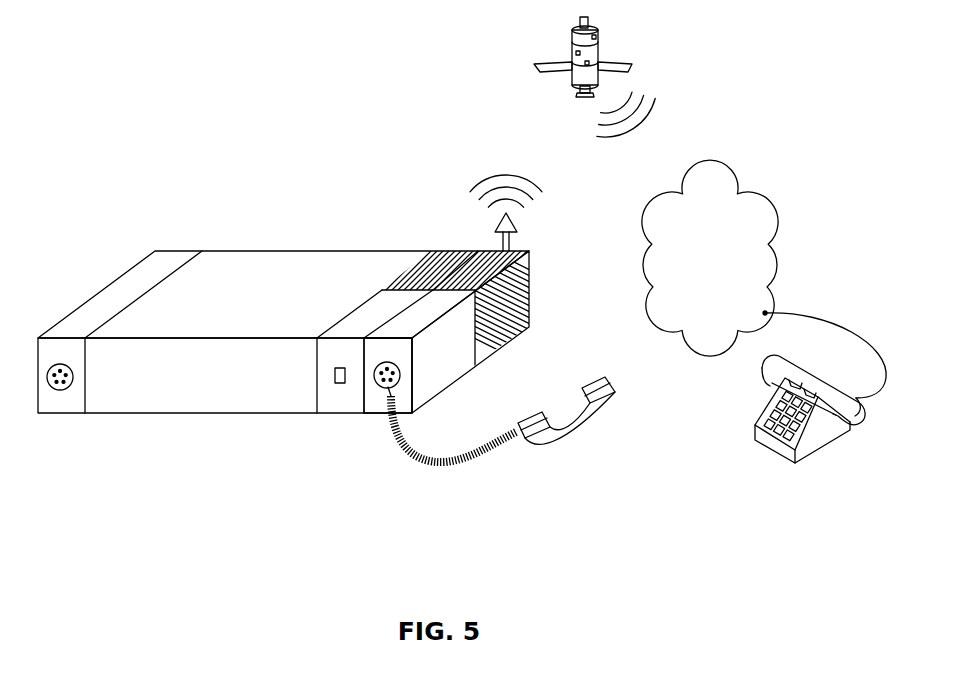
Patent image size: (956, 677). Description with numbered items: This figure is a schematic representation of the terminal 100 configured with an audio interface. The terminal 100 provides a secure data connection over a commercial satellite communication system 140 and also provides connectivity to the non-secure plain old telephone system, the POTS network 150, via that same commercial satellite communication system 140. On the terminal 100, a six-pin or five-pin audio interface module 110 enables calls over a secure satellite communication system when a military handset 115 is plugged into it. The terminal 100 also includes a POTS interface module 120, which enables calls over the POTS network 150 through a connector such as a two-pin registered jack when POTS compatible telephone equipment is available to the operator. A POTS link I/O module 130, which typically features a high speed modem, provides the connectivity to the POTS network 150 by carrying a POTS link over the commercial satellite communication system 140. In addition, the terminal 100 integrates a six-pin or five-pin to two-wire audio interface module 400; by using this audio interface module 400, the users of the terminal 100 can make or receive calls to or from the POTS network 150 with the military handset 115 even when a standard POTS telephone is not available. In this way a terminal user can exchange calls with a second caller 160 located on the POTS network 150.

The terminal 100 is at (315, 251).
The audio interface module 110 is at (133, 278).
The POTS interface module 120 is at (340, 402).
The POTS link I/O module 130 is at (515, 285).
The audio interface module 400 is at (450, 368).
The military handset 115 is at (624, 411).
The commercial satellite communication system 140 is at (551, 38).
The POTS network 150 is at (710, 158).
The second caller 160 is at (757, 456).